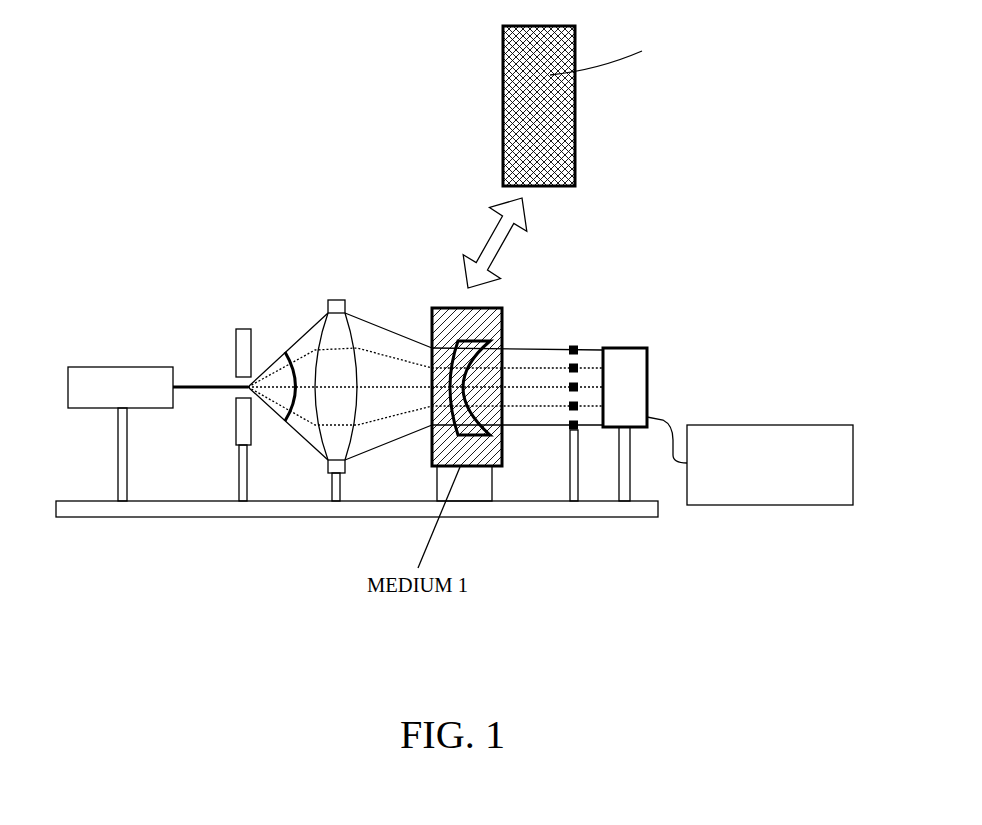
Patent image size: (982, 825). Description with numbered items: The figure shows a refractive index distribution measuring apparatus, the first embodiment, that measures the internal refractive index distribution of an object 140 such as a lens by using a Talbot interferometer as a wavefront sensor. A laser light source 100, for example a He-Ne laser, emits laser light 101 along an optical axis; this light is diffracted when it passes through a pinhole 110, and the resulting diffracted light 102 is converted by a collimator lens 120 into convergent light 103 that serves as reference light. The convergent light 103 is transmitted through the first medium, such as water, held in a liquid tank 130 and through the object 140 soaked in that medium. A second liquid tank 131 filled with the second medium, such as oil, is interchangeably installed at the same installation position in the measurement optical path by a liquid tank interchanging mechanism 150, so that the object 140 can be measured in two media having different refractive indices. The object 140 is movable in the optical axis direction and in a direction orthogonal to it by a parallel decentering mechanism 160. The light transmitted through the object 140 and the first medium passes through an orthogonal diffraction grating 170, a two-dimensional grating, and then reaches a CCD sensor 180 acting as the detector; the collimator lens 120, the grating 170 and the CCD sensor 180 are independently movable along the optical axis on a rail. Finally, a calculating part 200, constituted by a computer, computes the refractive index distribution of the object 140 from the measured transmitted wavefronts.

The laser light source 100 is at (120, 419).
The laser light 101 is at (193, 390).
The pinhole 110 is at (233, 402).
The diffracted light 102 is at (285, 415).
The collimator lens 120 is at (325, 384).
The convergent light 103 is at (382, 357).
The liquid tank 130 is at (428, 308).
The liquid tank 131 is at (575, 117).
The object 140 is at (503, 323).
The liquid tank interchanging mechanism 150 is at (490, 238).
The parallel decentering mechanism 160 is at (458, 490).
The orthogonal diffraction grating 170 is at (575, 345).
The CCD sensor 180 is at (647, 383).
The calculating part 200 is at (745, 505).